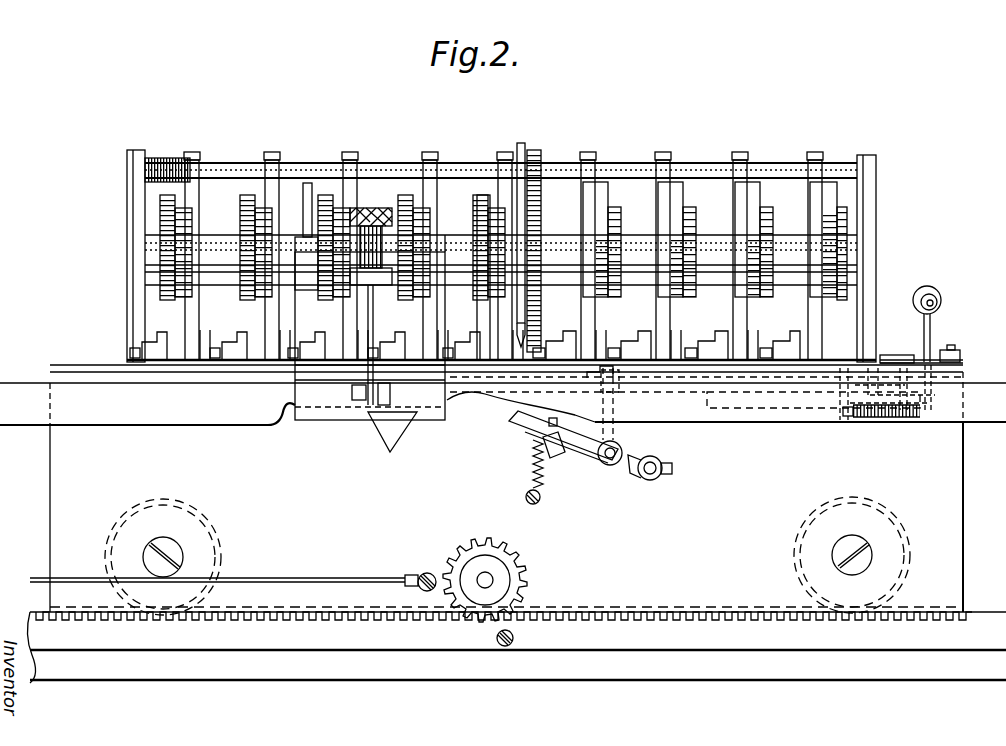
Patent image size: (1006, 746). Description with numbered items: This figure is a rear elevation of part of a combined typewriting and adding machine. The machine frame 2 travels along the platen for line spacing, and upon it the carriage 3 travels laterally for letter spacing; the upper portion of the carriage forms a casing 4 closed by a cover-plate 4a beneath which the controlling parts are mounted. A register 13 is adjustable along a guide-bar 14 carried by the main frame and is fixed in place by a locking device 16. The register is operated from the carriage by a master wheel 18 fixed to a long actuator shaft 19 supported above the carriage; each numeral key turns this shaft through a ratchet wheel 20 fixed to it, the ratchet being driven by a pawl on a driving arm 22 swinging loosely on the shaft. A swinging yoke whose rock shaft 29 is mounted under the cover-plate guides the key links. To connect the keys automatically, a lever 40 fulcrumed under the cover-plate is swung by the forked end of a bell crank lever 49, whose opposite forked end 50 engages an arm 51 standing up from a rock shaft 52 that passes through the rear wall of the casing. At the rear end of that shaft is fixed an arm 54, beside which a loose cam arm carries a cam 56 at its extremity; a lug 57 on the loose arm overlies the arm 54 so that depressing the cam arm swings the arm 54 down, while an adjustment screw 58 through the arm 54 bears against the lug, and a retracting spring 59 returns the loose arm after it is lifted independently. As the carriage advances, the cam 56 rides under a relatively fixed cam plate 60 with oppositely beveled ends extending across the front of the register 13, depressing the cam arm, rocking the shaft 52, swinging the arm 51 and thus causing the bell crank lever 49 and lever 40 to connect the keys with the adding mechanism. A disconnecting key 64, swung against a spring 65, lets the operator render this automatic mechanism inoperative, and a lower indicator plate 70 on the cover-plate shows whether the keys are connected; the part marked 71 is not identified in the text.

The machine frame 2 is at (516, 660).
The carriage 3 is at (974, 517).
The casing 4 is at (506, 556).
The cover-plate 4a is at (576, 371).
The register 13 is at (370, 301).
The guide-bar 14 is at (762, 418).
The locking device 16 is at (368, 377).
The master wheel 18 is at (544, 161).
The actuator shaft 19 is at (860, 250).
The ratchet wheel 20 is at (825, 292).
The driving arm 22 is at (818, 242).
The rock shaft 29 is at (822, 405).
The lever 40 is at (808, 378).
The bell crank lever 49 is at (680, 374).
The forked end 50 is at (583, 393).
The arm 51 is at (613, 400).
The rock shaft 52 is at (623, 451).
The arm 54 is at (560, 455).
The cam 56 is at (511, 425).
The lug 57 is at (549, 410).
The adjustment screw 58 is at (560, 467).
The retracting spring 59 is at (543, 490).
The cam plate 60 is at (301, 418).
The disconnecting key 64 is at (932, 290).
The spring 65 is at (866, 410).
The lower indicator plate 70 is at (945, 352).
The plate 71 is at (902, 356).